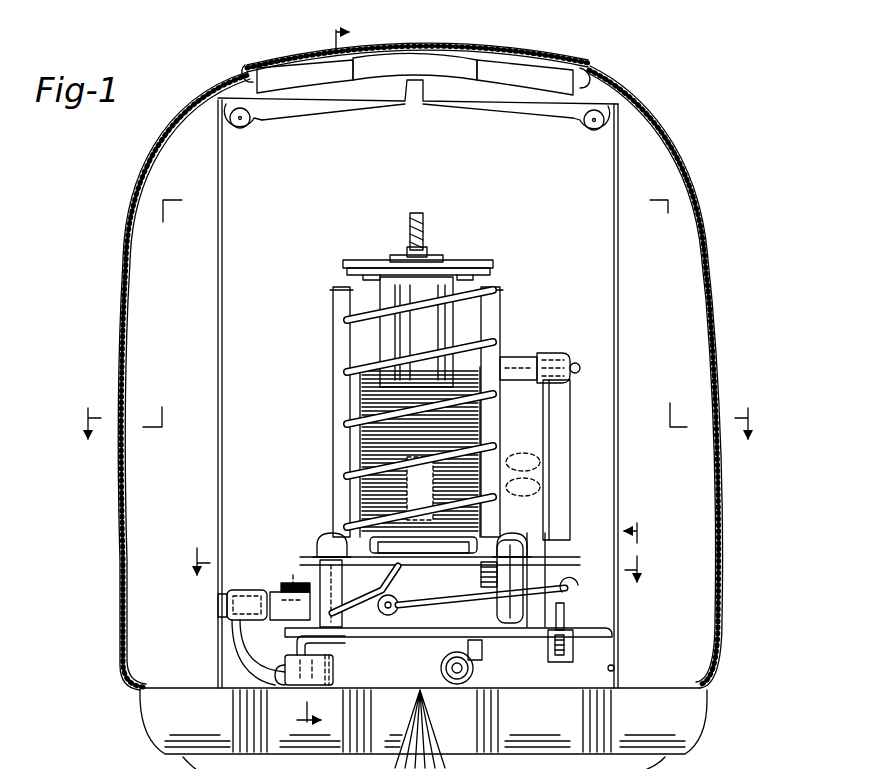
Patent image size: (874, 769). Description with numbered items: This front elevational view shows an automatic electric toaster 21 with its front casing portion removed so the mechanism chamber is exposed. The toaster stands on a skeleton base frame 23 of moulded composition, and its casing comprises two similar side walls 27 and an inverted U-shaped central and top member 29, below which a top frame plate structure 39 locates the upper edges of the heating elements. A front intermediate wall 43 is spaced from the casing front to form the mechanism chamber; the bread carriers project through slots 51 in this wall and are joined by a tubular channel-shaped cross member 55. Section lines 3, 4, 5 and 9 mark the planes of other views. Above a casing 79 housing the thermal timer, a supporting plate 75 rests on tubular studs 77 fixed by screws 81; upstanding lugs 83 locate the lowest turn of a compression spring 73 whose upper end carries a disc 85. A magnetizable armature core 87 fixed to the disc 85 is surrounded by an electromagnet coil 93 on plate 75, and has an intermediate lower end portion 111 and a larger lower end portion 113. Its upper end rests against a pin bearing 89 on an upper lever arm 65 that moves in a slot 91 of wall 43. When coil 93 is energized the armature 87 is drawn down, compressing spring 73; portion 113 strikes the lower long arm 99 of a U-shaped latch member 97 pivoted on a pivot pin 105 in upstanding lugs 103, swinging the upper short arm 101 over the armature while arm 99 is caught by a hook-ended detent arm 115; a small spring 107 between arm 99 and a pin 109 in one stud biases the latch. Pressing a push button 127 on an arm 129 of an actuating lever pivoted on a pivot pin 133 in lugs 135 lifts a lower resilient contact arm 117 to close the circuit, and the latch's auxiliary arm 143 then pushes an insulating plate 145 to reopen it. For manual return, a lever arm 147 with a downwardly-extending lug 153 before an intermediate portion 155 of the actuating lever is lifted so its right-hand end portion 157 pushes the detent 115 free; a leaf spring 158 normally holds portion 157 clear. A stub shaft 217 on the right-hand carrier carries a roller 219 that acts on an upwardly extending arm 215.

The section line 3 is at (640, 529).
The section line 4 is at (331, 374).
The section line 5 is at (420, 438).
The section line 9 is at (419, 578).
The automatic electric toaster 21 is at (773, 284).
The skeleton base frame 23 is at (708, 710).
The side walls 27 is at (118, 517).
The central and top member 29 is at (510, 58).
The top frame plate structure 39 is at (612, 82).
The front intermediate wall 43 is at (614, 243).
The slots 51 is at (340, 404).
The cross member 55 is at (351, 287).
The lever arm 65 is at (408, 224).
The compression spring 73 is at (480, 463).
The supporting plate 75 is at (540, 558).
The tubular studs 77 is at (530, 575).
The casing 79 is at (615, 668).
The screws 81 is at (330, 533).
The upstanding lugs 83 is at (480, 530).
The disc 85 is at (486, 262).
The armature core 87 is at (432, 332).
The pin bearing 89 is at (430, 251).
The slot 91 is at (426, 226).
The electromagnet coil 93 is at (358, 450).
The latch member 97 is at (472, 601).
The lower long arm 99 is at (562, 585).
The upper short arm 101 is at (394, 586).
The upstanding lugs 103 is at (417, 597).
The pivot pin 105 is at (390, 620).
The small spring 107 is at (470, 573).
The pin 109 is at (550, 588).
The intermediate lower end portion 111 is at (480, 468).
The larger lower end portion 113 is at (480, 490).
The detent arm 115 is at (566, 609).
The lower resilient contact arm 117 is at (258, 625).
The push button 127 is at (290, 687).
The arm 129 is at (333, 660).
The pivot pin 133 is at (217, 603).
The lugs 135 is at (232, 598).
The auxiliary arm 143 is at (322, 590).
The plate 145 is at (289, 588).
The lever arm 147 is at (509, 668).
The lug 153 is at (275, 668).
The intermediate portion 155 is at (255, 650).
The right-hand end portion 157 is at (580, 648).
The leaf spring 158 is at (475, 663).
The arm 215 is at (570, 452).
The stub shaft 217 is at (512, 357).
The roller 219 is at (560, 355).